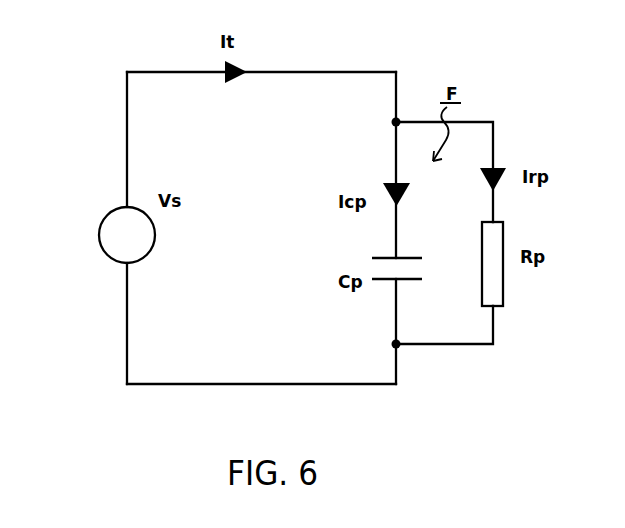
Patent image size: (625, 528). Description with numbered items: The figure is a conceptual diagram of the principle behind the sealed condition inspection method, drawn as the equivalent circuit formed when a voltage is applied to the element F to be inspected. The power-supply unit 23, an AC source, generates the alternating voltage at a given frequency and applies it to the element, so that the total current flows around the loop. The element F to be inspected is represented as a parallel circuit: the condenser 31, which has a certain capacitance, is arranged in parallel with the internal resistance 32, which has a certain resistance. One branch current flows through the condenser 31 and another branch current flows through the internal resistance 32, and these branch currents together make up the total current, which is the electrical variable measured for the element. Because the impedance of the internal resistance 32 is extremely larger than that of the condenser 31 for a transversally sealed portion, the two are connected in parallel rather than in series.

The power-supply unit 23 is at (99, 229).
The condenser 31 is at (388, 283).
The internal resistance 32 is at (504, 282).